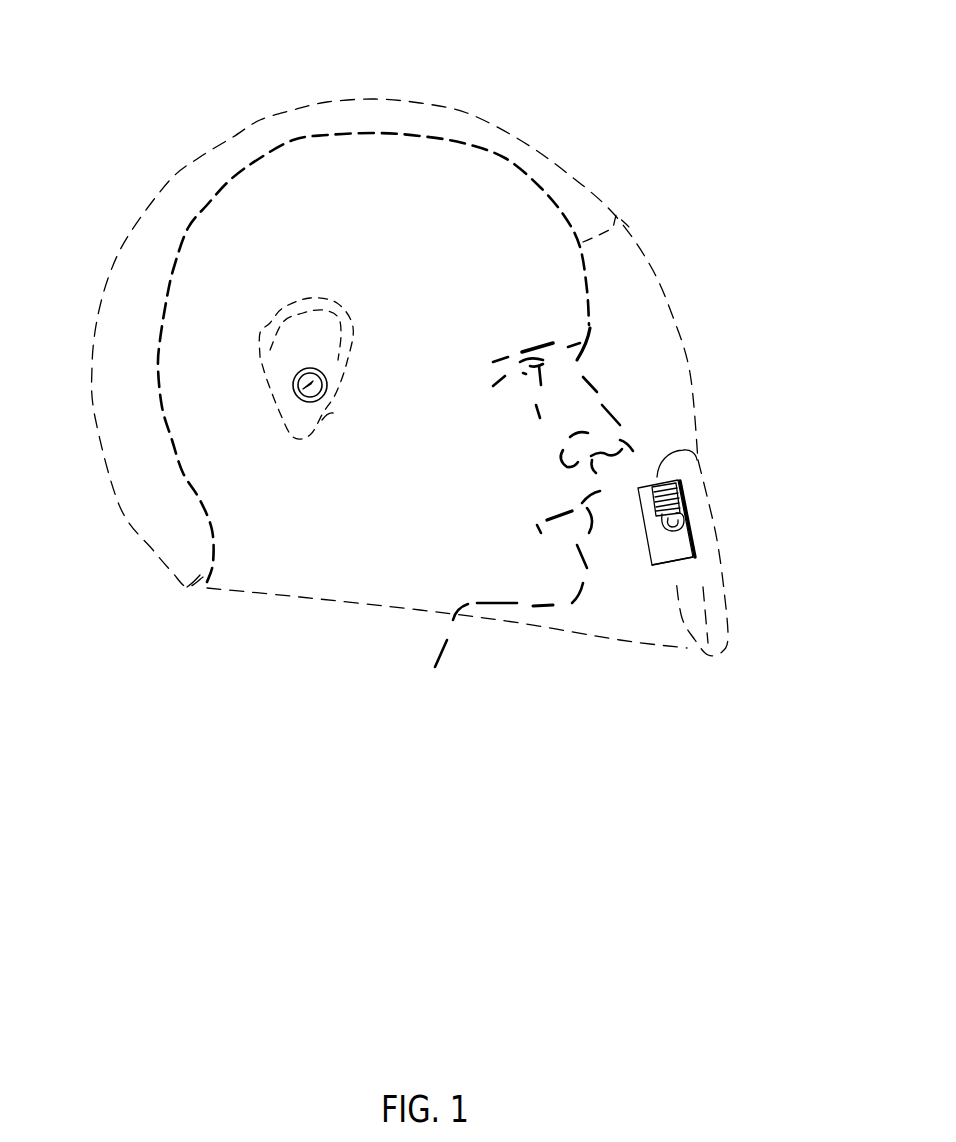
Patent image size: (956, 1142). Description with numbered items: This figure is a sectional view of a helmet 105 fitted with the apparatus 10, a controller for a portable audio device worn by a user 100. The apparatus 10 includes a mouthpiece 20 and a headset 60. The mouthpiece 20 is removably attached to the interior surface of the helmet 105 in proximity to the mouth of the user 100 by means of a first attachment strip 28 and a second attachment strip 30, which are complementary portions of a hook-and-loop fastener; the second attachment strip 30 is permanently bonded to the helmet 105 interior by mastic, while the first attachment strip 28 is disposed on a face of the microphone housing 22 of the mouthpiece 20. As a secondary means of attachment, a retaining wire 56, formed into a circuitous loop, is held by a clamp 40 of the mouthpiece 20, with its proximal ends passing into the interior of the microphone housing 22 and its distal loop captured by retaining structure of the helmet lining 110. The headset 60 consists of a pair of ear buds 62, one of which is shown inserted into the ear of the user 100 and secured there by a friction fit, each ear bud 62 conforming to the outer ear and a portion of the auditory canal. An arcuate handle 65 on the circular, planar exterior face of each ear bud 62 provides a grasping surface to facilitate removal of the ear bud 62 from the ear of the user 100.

The apparatus 10 is at (400, 372).
The user 100 is at (333, 170).
The helmet 105 is at (206, 150).
The helmet lining 110 is at (465, 106).
The headset 60 is at (198, 391).
The arcuate handle 65 is at (295, 388).
The ear bud 62 is at (293, 393).
The mouthpiece 20 is at (699, 537).
The second attachment strip 30 is at (692, 537).
The clamp 40 is at (688, 495).
The retaining wire 56 is at (739, 535).
The microphone housing 22 is at (692, 547).
The first attachment strip 28 is at (687, 547).